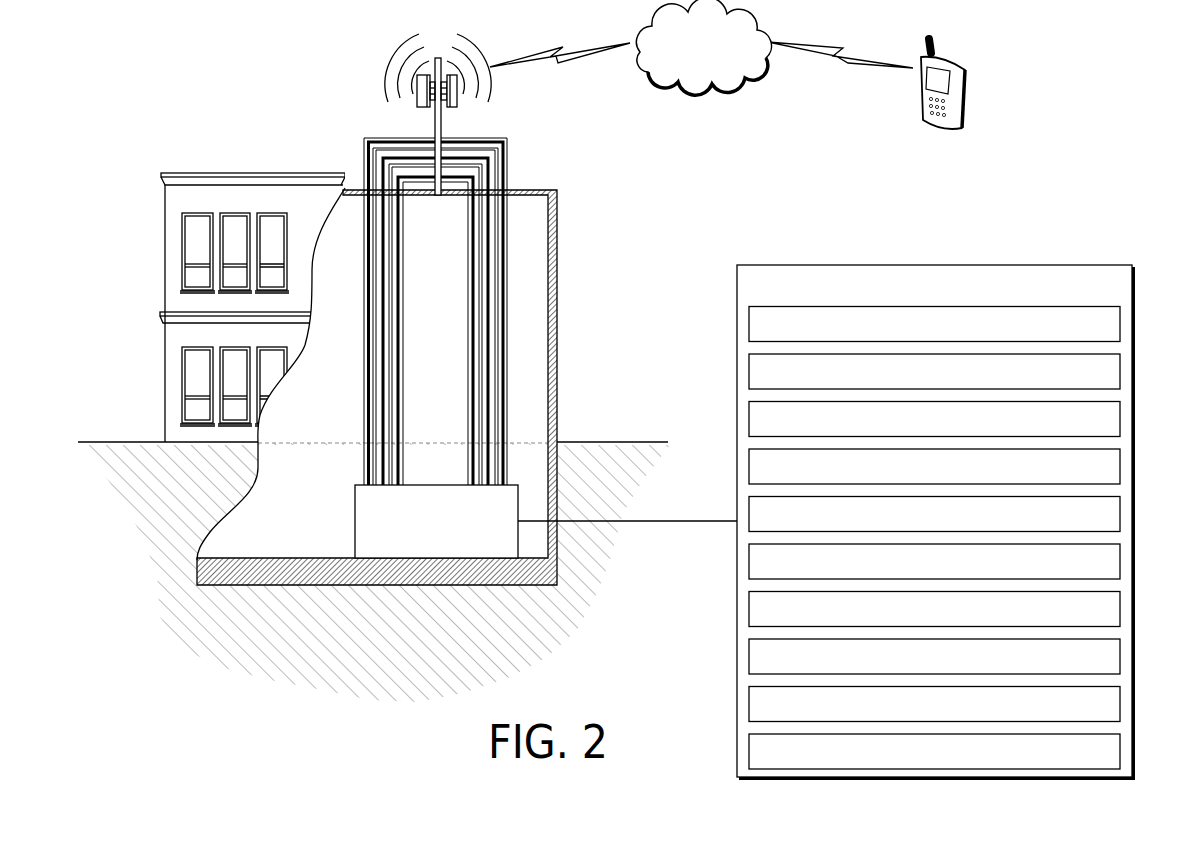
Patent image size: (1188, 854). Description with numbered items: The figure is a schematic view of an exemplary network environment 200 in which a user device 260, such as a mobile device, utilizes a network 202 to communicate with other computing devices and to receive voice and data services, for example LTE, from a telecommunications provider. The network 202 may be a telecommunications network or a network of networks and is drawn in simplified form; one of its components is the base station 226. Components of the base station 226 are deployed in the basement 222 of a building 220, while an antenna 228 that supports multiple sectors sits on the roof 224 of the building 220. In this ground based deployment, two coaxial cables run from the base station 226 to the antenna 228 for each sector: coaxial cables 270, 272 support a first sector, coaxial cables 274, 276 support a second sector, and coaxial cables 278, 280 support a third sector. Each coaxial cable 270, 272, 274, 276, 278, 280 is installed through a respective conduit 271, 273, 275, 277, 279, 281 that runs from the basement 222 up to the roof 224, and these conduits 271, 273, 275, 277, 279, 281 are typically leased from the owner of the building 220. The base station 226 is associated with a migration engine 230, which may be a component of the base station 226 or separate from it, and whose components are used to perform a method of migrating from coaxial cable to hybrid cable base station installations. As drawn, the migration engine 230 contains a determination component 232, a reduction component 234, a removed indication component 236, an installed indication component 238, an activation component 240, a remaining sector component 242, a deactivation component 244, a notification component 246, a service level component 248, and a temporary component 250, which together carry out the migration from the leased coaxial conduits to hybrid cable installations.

The network environment 200 is at (177, 86).
The network 202 is at (730, 86).
The building 220 is at (165, 208).
The basement 222 is at (313, 493).
The roof 224 is at (534, 189).
The base station 226 is at (355, 527).
The antenna 228 is at (435, 123).
The migration engine 230 is at (781, 265).
The determination component 232 is at (1120, 324).
The reduction component 234 is at (1120, 371).
The removed indication component 236 is at (1120, 418).
The installed indication component 238 is at (1120, 466).
The activation component 240 is at (1120, 514).
The remaining sector component 242 is at (1120, 561).
The deactivation component 244 is at (1120, 608).
The notification component 246 is at (1120, 656).
The service level component 248 is at (1120, 704).
The temporary component 250 is at (1120, 751).
The user device 260 is at (967, 88).
The coaxial cable 270 is at (411, 311).
The conduit 271 is at (411, 311).
The coaxial cable 272 is at (435, 326).
The conduit 273 is at (471, 428).
The coaxial cable 274 is at (409, 317).
The conduit 275 is at (409, 317).
The coaxial cable 276 is at (435, 317).
The conduit 277 is at (485, 362).
The coaxial cable 278 is at (403, 326).
The conduit 279 is at (403, 326).
The coaxial cable 280 is at (435, 311).
The conduit 281 is at (500, 295).